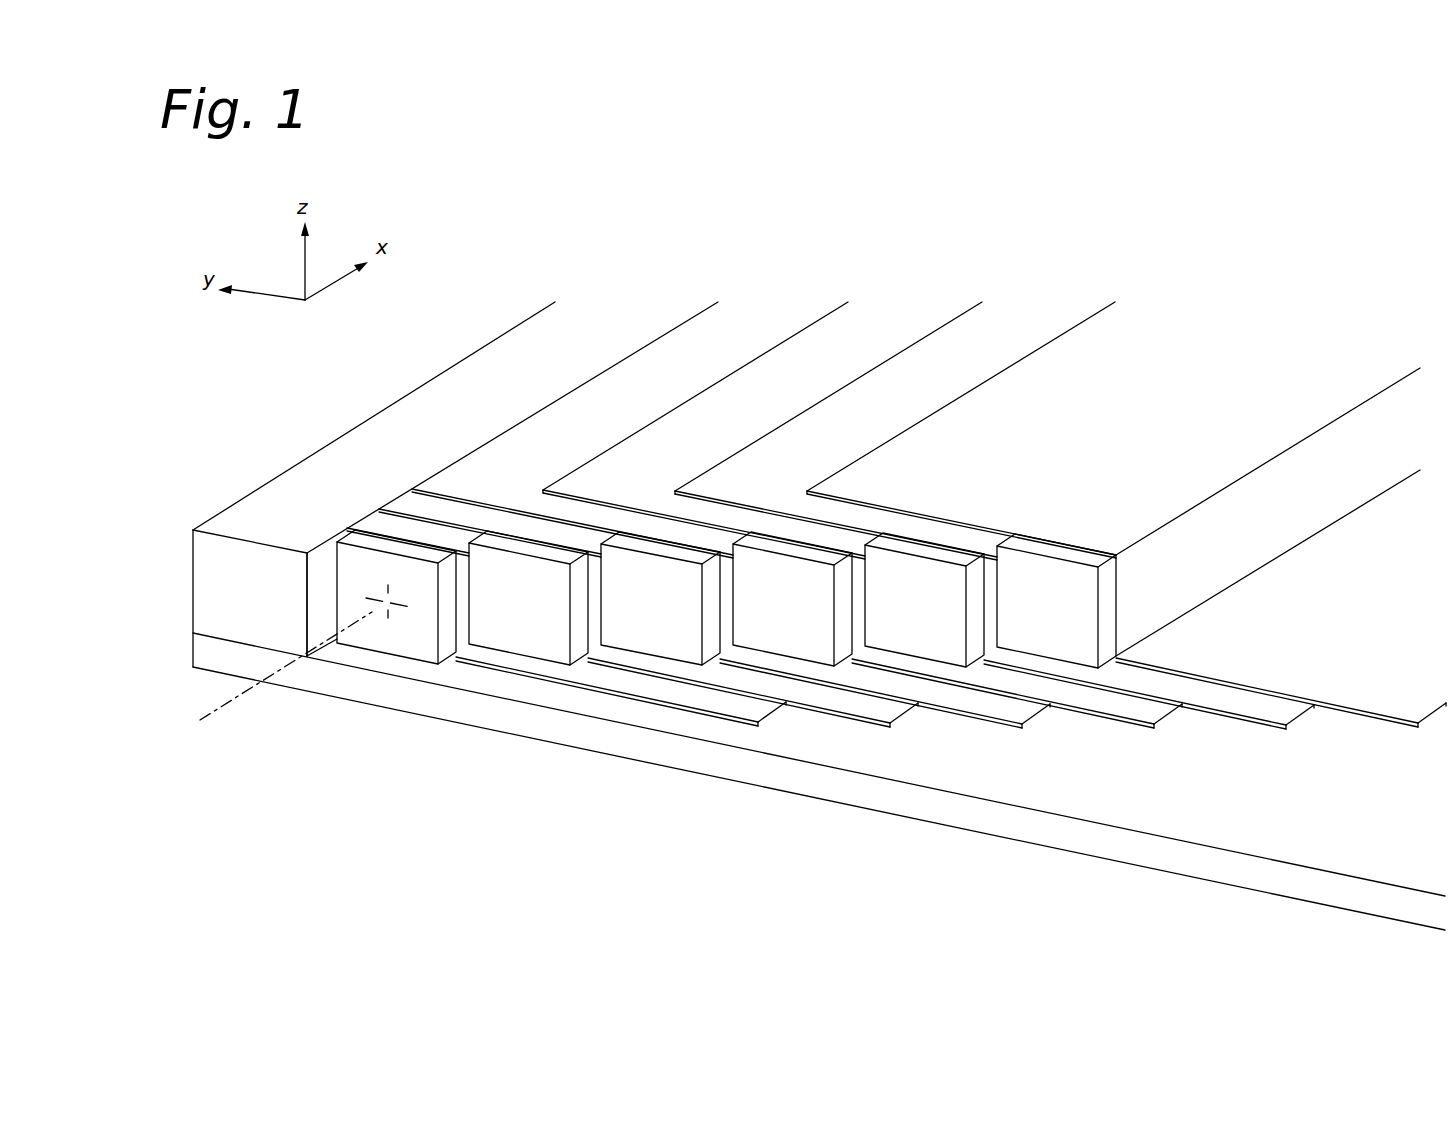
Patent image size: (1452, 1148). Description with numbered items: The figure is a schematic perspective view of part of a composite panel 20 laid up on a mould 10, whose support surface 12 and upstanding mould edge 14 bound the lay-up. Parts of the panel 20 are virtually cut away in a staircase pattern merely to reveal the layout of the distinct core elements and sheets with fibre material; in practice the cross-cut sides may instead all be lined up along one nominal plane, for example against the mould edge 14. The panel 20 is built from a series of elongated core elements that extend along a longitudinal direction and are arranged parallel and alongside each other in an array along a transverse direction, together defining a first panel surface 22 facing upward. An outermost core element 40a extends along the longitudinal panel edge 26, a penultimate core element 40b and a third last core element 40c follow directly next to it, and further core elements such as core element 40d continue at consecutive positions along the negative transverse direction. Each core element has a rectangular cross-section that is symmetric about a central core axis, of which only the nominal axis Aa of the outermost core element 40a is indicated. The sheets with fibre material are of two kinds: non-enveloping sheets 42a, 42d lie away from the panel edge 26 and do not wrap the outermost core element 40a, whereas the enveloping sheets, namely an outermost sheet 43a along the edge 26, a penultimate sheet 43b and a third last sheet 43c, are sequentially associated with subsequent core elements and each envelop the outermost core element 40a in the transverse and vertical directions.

The mould 10 is at (330, 728).
The support surface 12 is at (208, 647).
The mould edge 14 is at (240, 568).
The panel 20 is at (945, 297).
The first panel surface 22 is at (513, 468).
The first panel edge (longitudinal edge) 26 is at (322, 556).
The nominal central core axis Aa is at (289, 669).
The outermost core element 40a is at (380, 622).
The penultimate core element 40b is at (518, 605).
The third last core element 40c is at (643, 597).
The further core element 40d is at (768, 622).
The non-enveloping sheet 42a is at (750, 428).
The non-enveloping sheet 42d is at (876, 438).
The outermost enveloping sheet 43a is at (420, 535).
The penultimate enveloping sheet 43b is at (575, 540).
The third last enveloping sheet 43c is at (653, 527).